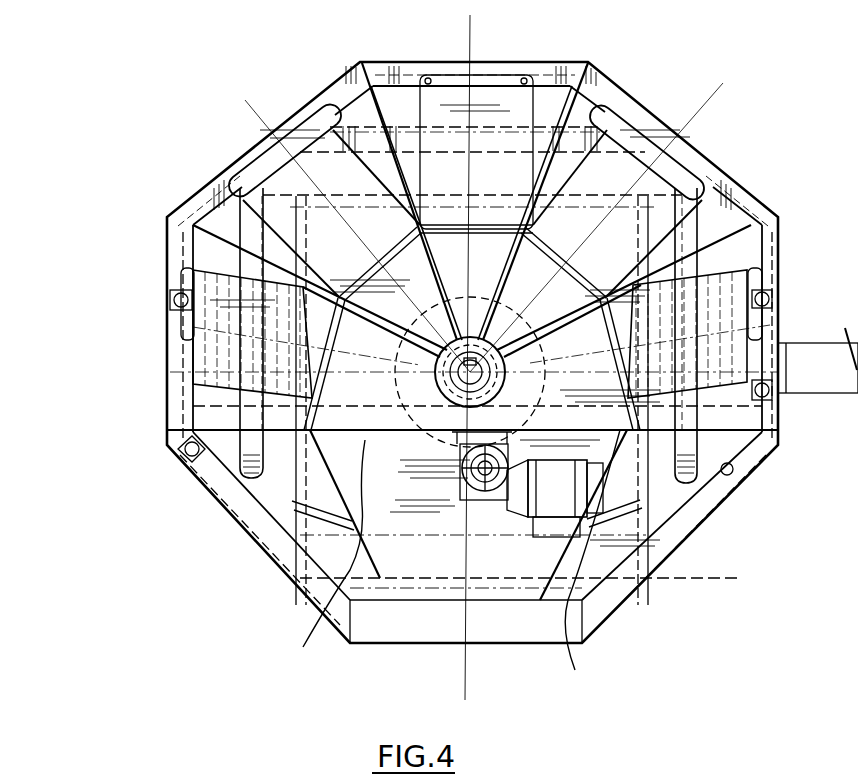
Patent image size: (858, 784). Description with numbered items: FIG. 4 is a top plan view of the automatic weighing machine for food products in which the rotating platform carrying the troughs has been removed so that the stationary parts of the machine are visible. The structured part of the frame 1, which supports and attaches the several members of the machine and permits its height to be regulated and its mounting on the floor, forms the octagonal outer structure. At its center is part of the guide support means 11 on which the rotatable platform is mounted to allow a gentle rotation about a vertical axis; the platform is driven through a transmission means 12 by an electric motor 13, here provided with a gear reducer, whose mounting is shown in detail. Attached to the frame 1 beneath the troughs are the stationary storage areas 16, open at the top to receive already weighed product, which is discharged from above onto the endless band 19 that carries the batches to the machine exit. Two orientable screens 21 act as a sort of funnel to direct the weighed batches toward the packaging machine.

The frame 1 is at (375, 108).
The storage area 16 is at (282, 176).
The endless band 19 is at (395, 461).
The electric motor 13 is at (573, 477).
The screen 21 is at (451, 561).
The guide support means 11 is at (412, 430).
The transmission means 12 is at (483, 445).